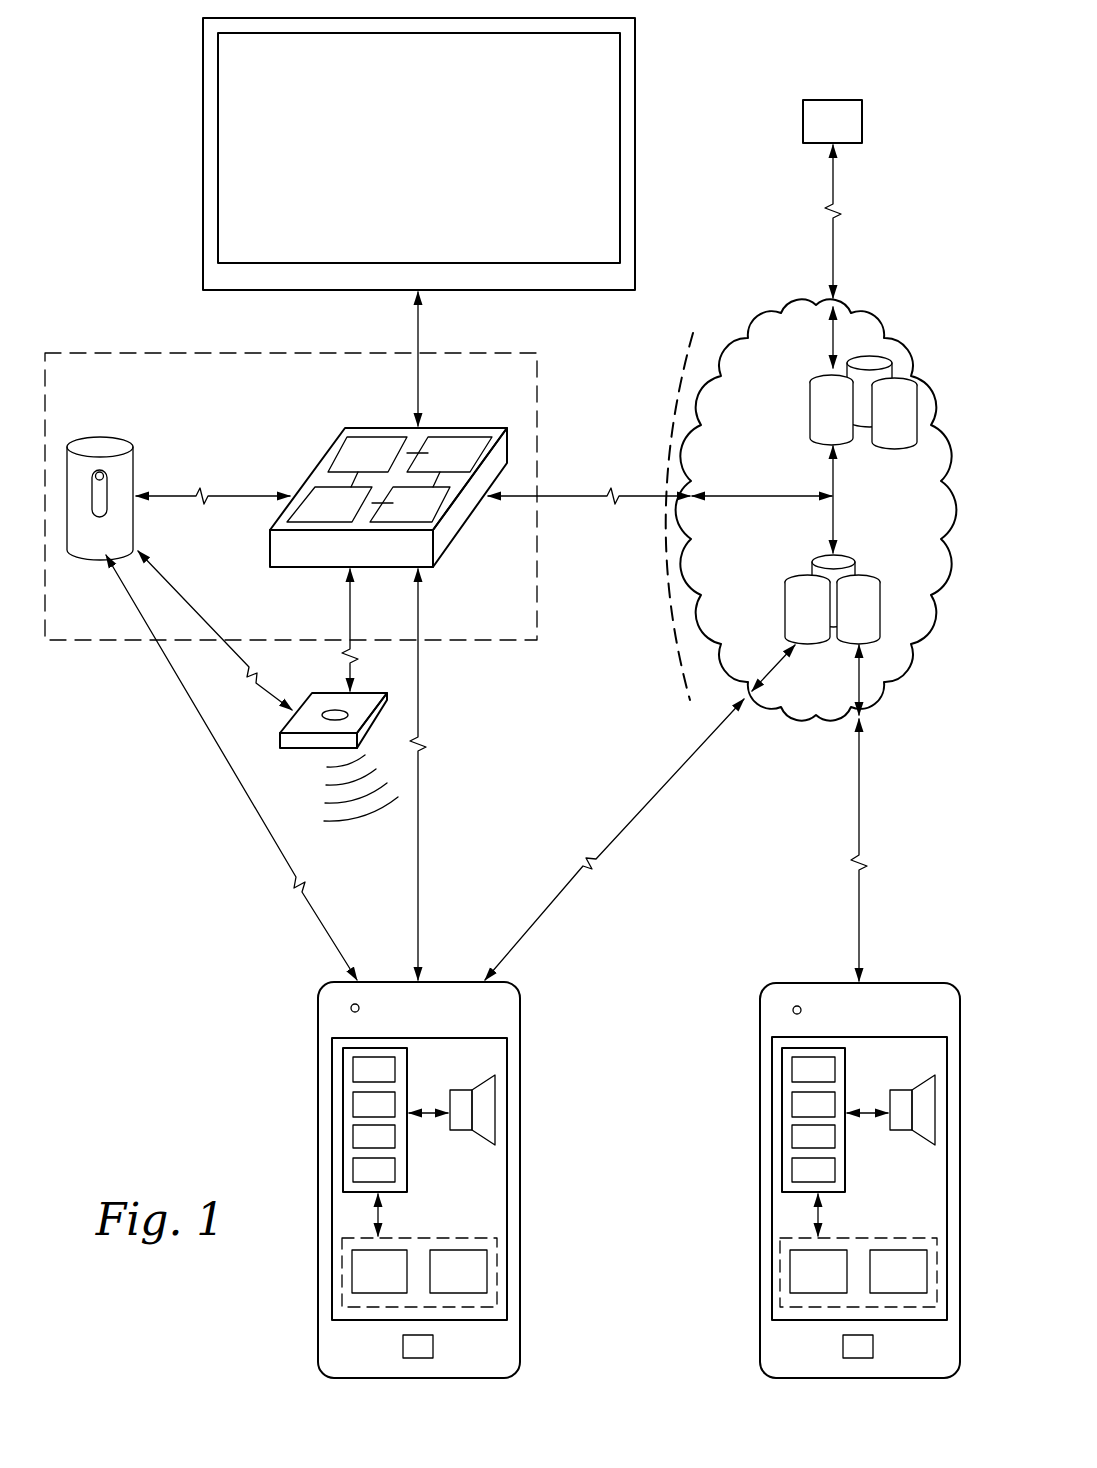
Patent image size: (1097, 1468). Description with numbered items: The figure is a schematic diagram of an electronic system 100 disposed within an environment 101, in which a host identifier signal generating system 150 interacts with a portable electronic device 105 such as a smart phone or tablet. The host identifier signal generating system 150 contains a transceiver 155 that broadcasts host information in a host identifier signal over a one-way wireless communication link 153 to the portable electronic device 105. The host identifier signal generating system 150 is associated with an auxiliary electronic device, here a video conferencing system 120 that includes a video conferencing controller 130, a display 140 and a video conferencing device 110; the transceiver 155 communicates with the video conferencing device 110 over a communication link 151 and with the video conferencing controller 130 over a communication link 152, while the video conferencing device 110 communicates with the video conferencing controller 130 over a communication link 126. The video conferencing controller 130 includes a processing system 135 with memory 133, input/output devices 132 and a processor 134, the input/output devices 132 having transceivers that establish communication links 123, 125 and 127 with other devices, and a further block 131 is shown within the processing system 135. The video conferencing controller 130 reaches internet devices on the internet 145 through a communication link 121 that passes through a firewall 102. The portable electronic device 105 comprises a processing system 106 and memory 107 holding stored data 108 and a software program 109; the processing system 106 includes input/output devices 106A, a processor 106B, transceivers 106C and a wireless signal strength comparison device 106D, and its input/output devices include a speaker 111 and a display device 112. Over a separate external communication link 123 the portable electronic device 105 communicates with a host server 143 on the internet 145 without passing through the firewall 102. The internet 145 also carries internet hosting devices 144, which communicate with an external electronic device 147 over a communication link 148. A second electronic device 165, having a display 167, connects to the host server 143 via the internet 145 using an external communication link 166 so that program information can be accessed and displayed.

The electronic system 100 is at (740, 34).
The environment 101 is at (108, 1052).
The firewall 102 is at (672, 633).
The portable electronic device 105 is at (346, 1180).
The processing system 106 is at (355, 1120).
The input/output (I/O) devices 106A is at (353, 1068).
The processor 106B is at (353, 1103).
The transceivers 106C is at (353, 1138).
The wireless signal strength comparison device 106D is at (353, 1170).
The memory 107 is at (419, 1256).
The stored data 108 is at (360, 1286).
The software program 109 is at (438, 1286).
The video conferencing device 110 is at (82, 546).
The speaker 111 is at (487, 1080).
The display device 112 is at (413, 1038).
The video conferencing system 120 is at (140, 352).
The communication link 121 is at (578, 492).
The external communication link 123 is at (650, 806).
The communication link 125 is at (423, 668).
The communication link 126 is at (173, 495).
The communication link 127 is at (183, 693).
The video conferencing controller 130 is at (374, 468).
The module 131 is at (428, 467).
The input/output (I/O) devices 132 is at (348, 467).
The memory 133 is at (391, 516).
The processor 134 is at (309, 516).
The processing system 135 is at (470, 427).
The display 140 is at (397, 154).
The host server 143 is at (867, 580).
The internet hosting devices 144 is at (810, 410).
The internet 145 is at (790, 303).
The external electronic device 147 is at (813, 136).
The communication link 148 is at (835, 243).
The host identifier signal generating system 150 is at (325, 727).
The communication link 151 is at (190, 603).
The communication link 152 is at (350, 620).
The communication link 153 is at (373, 811).
The transceiver 155 is at (300, 750).
The second electronic device 165 is at (819, 1180).
The external communication link 166 is at (862, 832).
The display 167 is at (852, 1037).